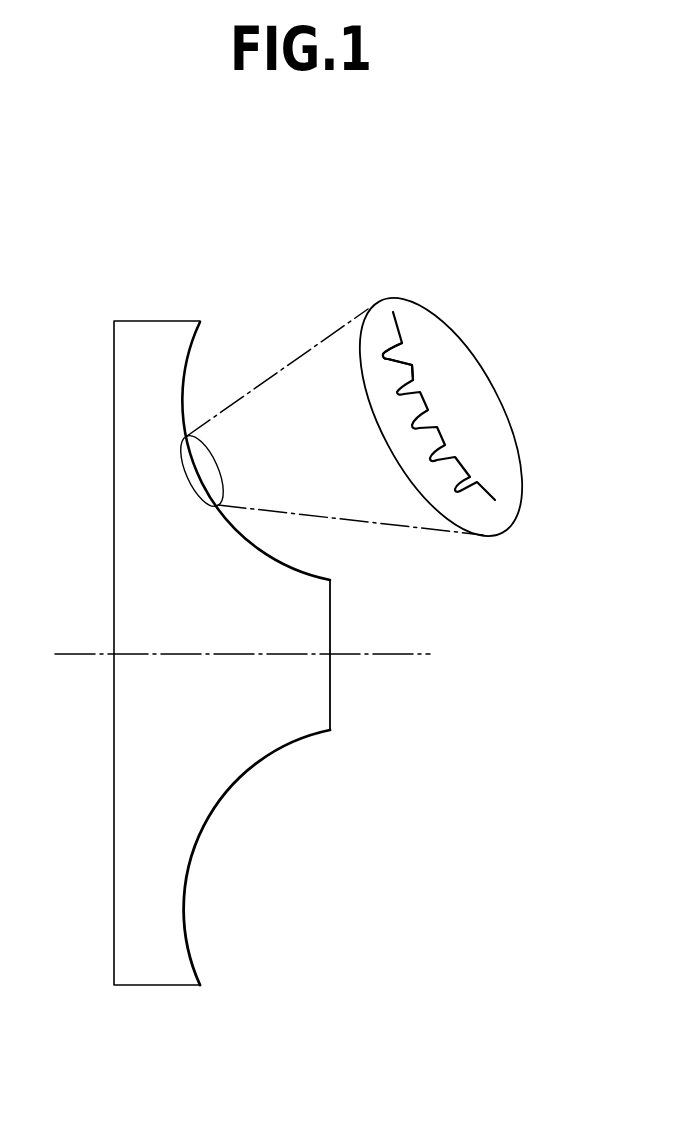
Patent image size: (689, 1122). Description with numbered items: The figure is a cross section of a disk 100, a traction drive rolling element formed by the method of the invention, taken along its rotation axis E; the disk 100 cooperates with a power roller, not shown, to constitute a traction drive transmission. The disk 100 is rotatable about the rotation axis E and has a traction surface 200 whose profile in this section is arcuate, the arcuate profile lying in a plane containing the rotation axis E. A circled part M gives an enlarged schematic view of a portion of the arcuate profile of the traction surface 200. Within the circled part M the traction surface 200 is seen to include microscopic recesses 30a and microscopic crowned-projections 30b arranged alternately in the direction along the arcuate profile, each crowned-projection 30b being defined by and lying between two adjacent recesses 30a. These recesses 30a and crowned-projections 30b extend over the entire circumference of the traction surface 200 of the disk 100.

The disk 100 is at (262, 718).
The traction surface 200 is at (197, 852).
The microscopic recesses 30a is at (385, 356).
The microscopic crowned-projections 30b is at (408, 368).
The circled part M is at (415, 298).
The rotation axis E is at (405, 655).